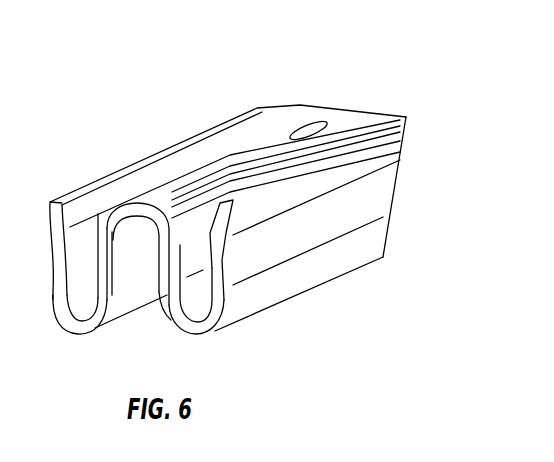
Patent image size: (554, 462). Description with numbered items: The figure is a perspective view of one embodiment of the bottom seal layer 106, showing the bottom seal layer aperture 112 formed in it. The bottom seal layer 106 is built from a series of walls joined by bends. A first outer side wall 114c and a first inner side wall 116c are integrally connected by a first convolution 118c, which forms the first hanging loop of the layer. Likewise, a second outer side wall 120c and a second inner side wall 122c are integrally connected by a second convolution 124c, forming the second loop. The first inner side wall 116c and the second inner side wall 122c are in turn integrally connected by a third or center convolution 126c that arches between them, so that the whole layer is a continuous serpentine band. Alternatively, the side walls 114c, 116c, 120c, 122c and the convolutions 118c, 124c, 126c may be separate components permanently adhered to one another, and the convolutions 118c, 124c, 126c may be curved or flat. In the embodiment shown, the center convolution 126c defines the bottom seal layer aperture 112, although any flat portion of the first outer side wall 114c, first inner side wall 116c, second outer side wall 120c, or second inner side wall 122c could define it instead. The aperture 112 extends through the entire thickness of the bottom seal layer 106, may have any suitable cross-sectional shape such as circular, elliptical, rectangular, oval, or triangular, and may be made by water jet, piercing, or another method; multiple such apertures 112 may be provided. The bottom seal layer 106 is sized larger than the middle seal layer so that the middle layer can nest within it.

The bottom seal layer 106 is at (126, 70).
The bottom seal layer aperture 112 is at (309, 125).
The first outer side wall 114c is at (53, 227).
The first inner side wall 116c is at (97, 232).
The first convolution 118c is at (73, 333).
The second outer side wall 120c is at (217, 252).
The second inner side wall 122c is at (177, 293).
The second convolution 124c is at (185, 335).
The center convolution 126c is at (233, 162).